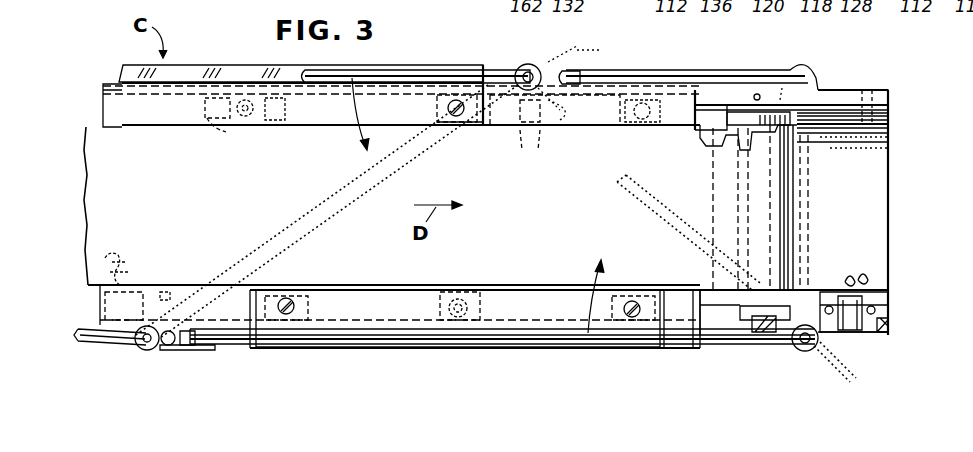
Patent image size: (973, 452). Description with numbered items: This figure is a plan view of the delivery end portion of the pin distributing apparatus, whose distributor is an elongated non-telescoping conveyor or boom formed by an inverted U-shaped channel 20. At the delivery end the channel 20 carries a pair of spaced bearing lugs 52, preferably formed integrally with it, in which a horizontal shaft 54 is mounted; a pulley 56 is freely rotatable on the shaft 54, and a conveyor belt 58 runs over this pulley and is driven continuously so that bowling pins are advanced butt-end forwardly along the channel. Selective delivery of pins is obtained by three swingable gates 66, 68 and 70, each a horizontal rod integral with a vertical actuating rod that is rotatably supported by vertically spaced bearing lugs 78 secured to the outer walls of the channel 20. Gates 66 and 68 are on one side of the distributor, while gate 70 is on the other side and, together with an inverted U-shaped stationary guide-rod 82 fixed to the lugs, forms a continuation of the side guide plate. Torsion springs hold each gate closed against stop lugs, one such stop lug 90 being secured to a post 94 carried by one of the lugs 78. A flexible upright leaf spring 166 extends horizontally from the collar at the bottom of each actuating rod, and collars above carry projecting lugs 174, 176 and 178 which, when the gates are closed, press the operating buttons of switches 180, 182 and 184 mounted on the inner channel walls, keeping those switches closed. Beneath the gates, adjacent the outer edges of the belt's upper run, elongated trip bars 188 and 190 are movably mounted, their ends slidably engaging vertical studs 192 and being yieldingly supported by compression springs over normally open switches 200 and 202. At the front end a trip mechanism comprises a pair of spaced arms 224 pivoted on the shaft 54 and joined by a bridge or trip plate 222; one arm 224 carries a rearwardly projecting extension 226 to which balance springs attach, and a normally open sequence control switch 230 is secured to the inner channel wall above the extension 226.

The inverted U-shaped channel 20 is at (101, 105).
The bearing lugs 52 is at (890, 101).
The horizontal shaft 54 is at (783, 88).
The pulley 56 is at (712, 200).
The conveyor belt 58 is at (85, 178).
The swingable gate 66 is at (92, 347).
The swingable gate 68 is at (640, 213).
The swingable gate 70 is at (408, 71).
The bearing lugs 78 is at (525, 65).
The inverted U-shaped stationary guide-rod 82 is at (652, 71).
The stop lug 90 is at (212, 351).
The post 94 is at (172, 350).
The leaf spring 166 is at (584, 80).
The projecting lug 174 is at (166, 285).
The projecting lug 176 is at (842, 352).
The projecting lug 178 is at (540, 130).
The switch 180 is at (131, 285).
The switch 182 is at (860, 300).
The switch 184 is at (524, 150).
The trip bar 188 is at (567, 349).
The trip bar 190 is at (198, 66).
The vertical studs 192 is at (440, 108).
The normally open switch 200 is at (440, 300).
The normally open switch 202 is at (213, 134).
The trip plate 222 is at (886, 189).
The arms 224 is at (741, 112).
The extension 226 is at (708, 112).
The sequence control switch 230 is at (634, 118).